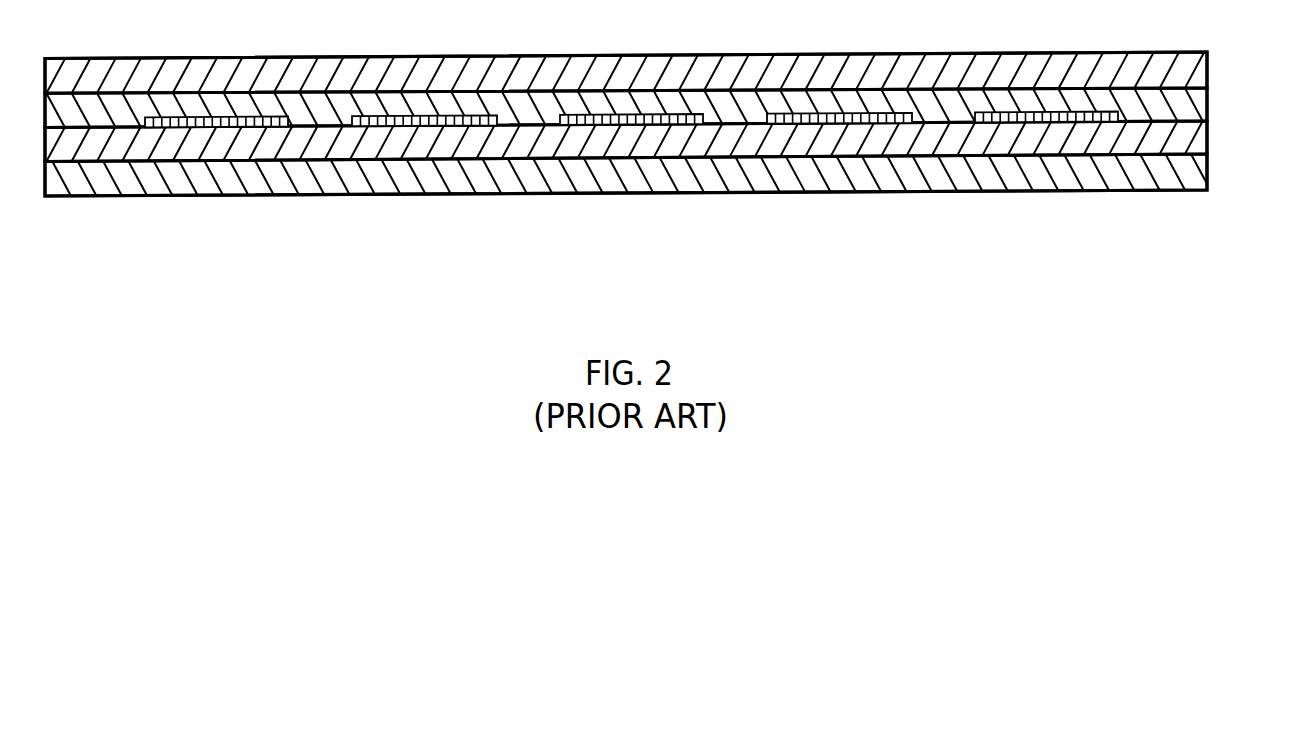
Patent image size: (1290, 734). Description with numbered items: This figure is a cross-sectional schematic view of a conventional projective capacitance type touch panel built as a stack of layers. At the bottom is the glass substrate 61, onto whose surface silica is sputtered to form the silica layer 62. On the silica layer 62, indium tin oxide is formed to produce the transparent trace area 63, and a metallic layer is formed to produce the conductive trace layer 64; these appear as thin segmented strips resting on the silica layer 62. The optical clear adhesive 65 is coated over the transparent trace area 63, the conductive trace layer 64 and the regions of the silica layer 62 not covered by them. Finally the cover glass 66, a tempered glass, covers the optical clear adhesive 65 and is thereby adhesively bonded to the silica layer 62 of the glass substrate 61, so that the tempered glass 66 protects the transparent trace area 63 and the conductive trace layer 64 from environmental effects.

The cover glass 66 is at (1209, 61).
The optical clear adhesive 65 is at (1209, 97).
The silica layer 62 is at (1209, 133).
The glass substrate 61 is at (1209, 168).
The transparent trace area 63 is at (1072, 115).
The conductive trace layer 64 is at (1143, 120).